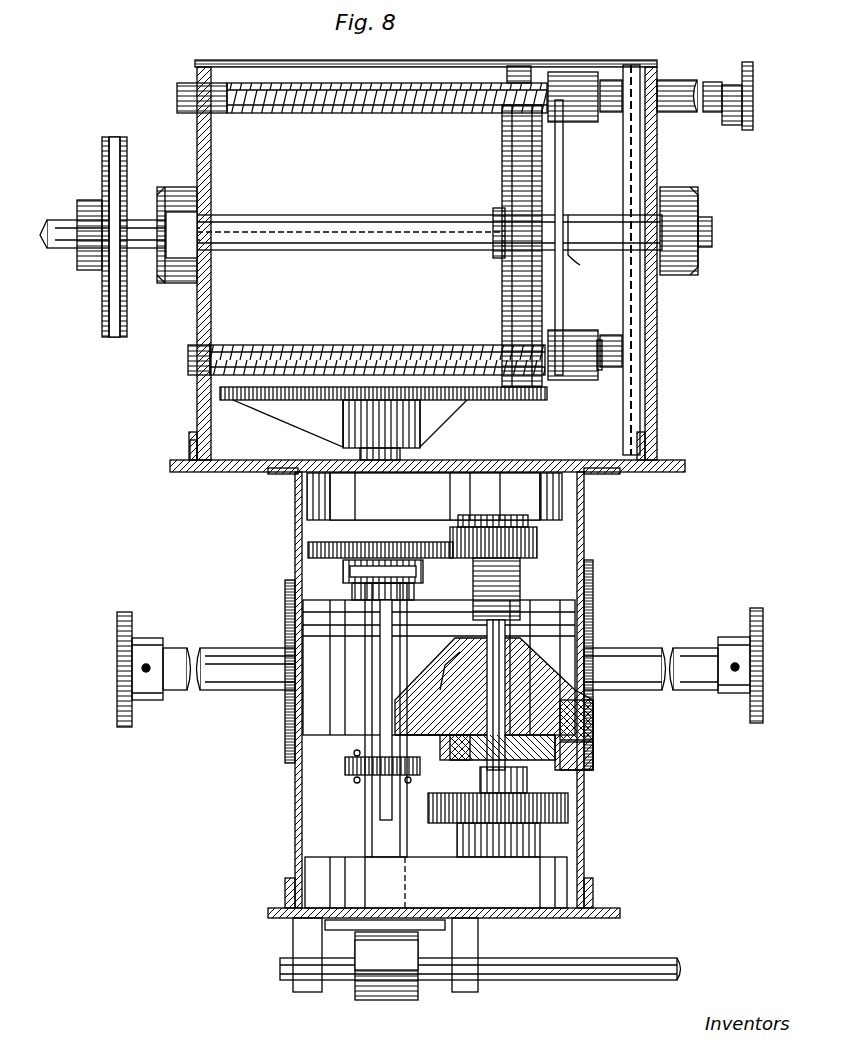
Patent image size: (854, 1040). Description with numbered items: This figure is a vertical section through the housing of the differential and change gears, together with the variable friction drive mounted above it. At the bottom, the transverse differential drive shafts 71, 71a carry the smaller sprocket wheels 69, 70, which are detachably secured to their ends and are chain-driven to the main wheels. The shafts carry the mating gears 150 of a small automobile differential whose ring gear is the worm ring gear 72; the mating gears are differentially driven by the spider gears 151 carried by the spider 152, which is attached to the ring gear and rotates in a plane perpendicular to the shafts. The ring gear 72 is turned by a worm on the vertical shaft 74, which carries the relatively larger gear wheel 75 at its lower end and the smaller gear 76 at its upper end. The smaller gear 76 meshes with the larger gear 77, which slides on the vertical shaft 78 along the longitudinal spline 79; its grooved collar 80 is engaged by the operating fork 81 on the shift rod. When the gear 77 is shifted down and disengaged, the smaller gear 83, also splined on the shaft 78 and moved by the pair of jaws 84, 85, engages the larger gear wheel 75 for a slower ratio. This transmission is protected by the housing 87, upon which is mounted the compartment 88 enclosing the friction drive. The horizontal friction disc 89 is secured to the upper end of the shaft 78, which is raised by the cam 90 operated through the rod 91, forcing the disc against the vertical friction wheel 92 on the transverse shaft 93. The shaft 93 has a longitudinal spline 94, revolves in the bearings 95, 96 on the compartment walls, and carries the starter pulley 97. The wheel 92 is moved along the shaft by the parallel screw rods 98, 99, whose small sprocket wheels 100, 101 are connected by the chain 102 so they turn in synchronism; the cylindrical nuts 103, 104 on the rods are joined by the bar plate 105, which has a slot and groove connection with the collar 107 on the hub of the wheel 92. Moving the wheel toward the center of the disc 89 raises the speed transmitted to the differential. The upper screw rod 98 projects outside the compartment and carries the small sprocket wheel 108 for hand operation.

The smaller sprocket wheel 69 is at (132, 620).
The smaller sprocket wheel 70 is at (768, 598).
The transverse differential drive shaft 71 is at (225, 690).
The transverse differential drive shaft 71a is at (640, 650).
The worm ring gear 72 is at (520, 655).
The vertical shaft 74 is at (527, 780).
The larger gear wheel 75 is at (568, 808).
The smaller gear 76 is at (520, 543).
The larger gear 77 is at (308, 548).
The vertical shaft 78 is at (365, 815).
The longitudinal spline 79 is at (386, 822).
The grooved collar 80 is at (352, 585).
The operating fork 81 is at (343, 568).
The smaller gear 83 is at (345, 766).
The jaw 84 is at (354, 753).
The jaw 85 is at (355, 782).
The housing 87 is at (285, 720).
The compartment 88 is at (212, 318).
The friction disc 89 is at (465, 418).
The cam 90 is at (380, 960).
The rod 91 is at (515, 975).
The vertical friction wheel 92 is at (502, 152).
The shaft 93 is at (375, 215).
The longitudinal spline 94 is at (486, 200).
The bearing 95 is at (175, 280).
The bearing 96 is at (700, 200).
The starter pulley 97 is at (101, 300).
The screw rod 98 is at (315, 113).
The screw rod 99 is at (285, 345).
The small sprocket wheel 100 is at (628, 68).
The small sprocket wheel 101 is at (615, 370).
The chain 102 is at (631, 150).
The cylindrical nut 103 is at (578, 120).
The cylindrical nut 104 is at (588, 330).
The bar plate 105 is at (563, 178).
The collar 107 is at (575, 245).
The small sprocket wheel 108 is at (753, 90).
The mating gear 150 is at (593, 718).
The spider gear 151 is at (593, 745).
The spider 152 is at (455, 655).